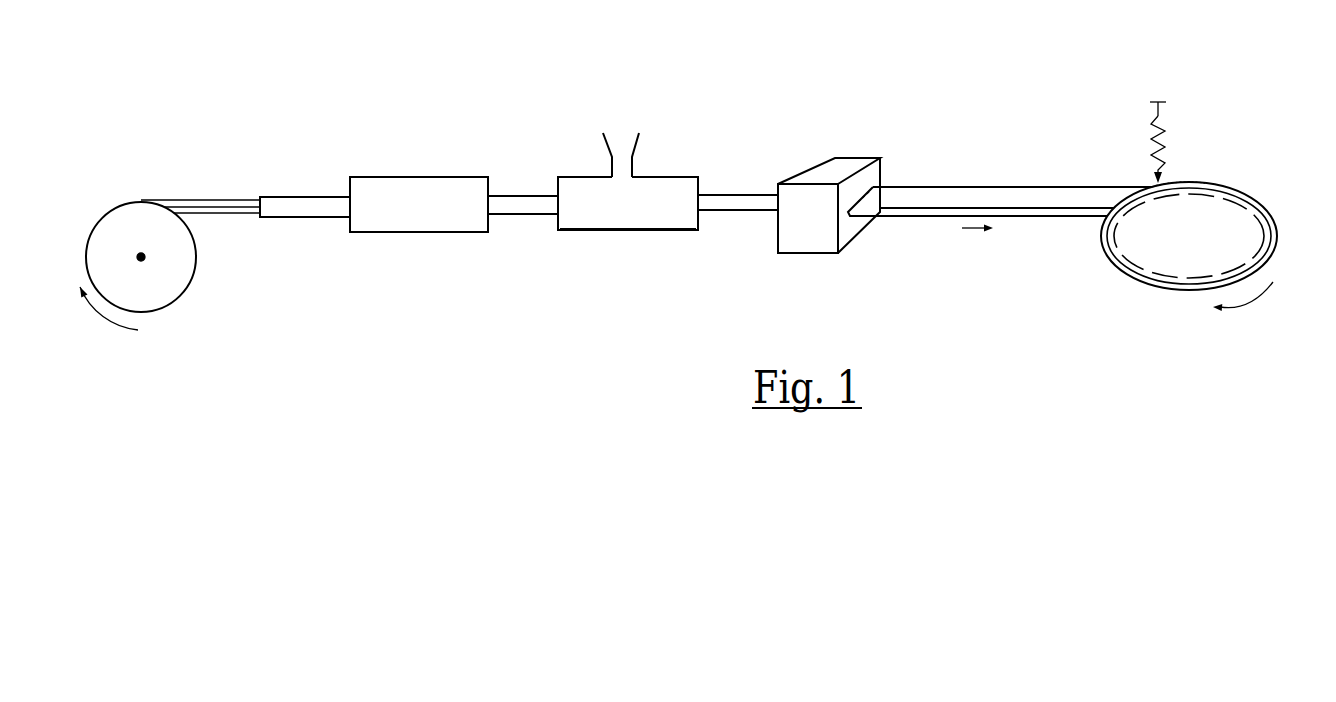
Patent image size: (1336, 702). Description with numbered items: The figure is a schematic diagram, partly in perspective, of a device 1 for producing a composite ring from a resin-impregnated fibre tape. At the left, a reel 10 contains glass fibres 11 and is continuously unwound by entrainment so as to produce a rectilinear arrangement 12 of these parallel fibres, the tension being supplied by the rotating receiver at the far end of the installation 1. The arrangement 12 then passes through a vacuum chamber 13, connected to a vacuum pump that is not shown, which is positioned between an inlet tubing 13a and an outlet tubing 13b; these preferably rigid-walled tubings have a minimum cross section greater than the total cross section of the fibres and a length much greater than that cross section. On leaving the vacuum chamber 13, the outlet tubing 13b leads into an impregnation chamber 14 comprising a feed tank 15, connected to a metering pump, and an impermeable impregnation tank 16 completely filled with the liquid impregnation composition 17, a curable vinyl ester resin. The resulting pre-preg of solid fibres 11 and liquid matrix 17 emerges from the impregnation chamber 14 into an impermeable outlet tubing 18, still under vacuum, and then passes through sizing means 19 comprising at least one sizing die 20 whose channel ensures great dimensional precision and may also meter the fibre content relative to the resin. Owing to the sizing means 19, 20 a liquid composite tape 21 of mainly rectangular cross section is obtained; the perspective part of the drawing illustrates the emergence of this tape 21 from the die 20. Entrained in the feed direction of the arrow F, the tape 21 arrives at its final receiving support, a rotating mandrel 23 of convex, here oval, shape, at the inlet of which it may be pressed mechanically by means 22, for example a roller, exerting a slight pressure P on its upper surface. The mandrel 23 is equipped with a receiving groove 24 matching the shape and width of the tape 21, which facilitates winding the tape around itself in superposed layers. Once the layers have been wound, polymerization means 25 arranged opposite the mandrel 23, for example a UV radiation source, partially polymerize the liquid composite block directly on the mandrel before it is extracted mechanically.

The device 1 is at (670, 58).
The reel 10 is at (158, 288).
The glass fibres 11 is at (224, 211).
The rectilinear arrangement 12 is at (249, 188).
The inlet tubing 13a is at (314, 196).
The vacuum chamber 13 is at (415, 168).
The outlet tubing 13b is at (527, 196).
The impregnation chamber 14 is at (584, 144).
The feed tank 15 is at (622, 138).
The impregnation tank 16 is at (583, 233).
The impregnation composition 17 is at (648, 206).
The outlet tubing 18 is at (721, 193).
The sizing means 19 is at (806, 146).
The sizing die 20 is at (866, 190).
The composite tape 21 is at (984, 190).
The pressing means 22 is at (1162, 91).
The pressure P is at (1160, 133).
The feed direction F is at (977, 244).
The rotating mandrel 23 is at (1168, 249).
The receiving groove 24 is at (1193, 282).
The polymerization means 25 is at (1281, 188).